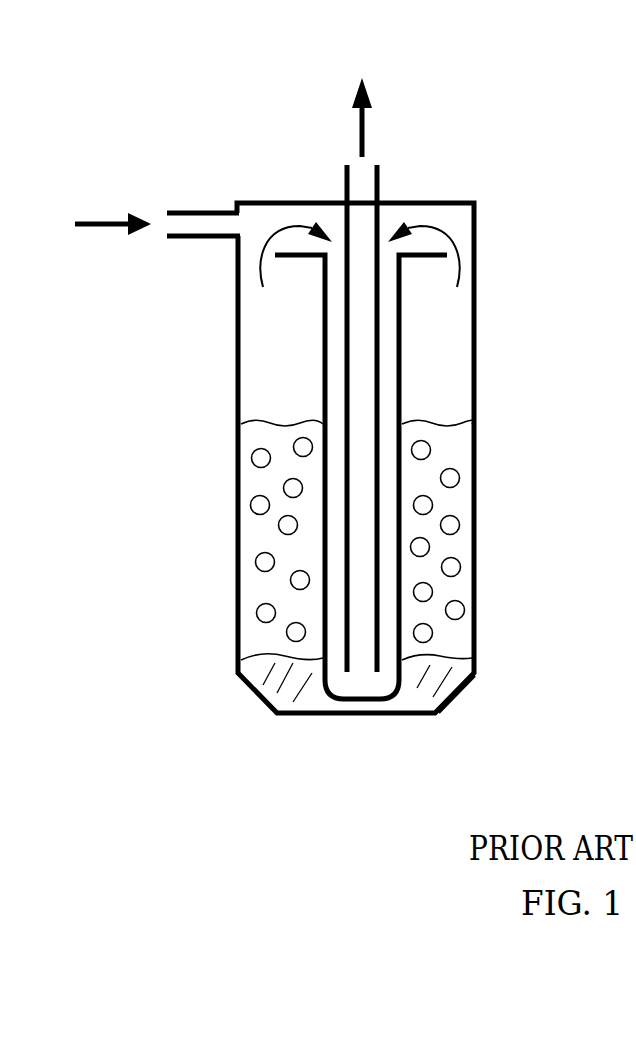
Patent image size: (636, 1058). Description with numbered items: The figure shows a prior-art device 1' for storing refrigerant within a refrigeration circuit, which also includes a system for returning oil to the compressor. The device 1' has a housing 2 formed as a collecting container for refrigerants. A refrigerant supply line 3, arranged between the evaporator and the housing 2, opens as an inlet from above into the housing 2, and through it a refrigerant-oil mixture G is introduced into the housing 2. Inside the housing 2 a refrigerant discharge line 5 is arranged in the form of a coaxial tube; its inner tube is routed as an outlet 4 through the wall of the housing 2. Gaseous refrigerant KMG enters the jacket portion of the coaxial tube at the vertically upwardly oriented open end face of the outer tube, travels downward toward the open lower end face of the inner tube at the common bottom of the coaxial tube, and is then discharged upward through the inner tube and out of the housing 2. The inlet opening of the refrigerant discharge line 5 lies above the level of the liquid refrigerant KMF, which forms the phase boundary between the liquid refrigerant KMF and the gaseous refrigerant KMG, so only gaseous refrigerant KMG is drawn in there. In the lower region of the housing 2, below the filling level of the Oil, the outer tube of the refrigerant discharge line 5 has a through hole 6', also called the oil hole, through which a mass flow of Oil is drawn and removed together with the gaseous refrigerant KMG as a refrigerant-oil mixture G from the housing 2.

The device 1' is at (341, 382).
The housing 2 is at (474, 270).
The refrigerant supply line 3 is at (197, 211).
The outlet 4 is at (380, 177).
The refrigerant discharge line 5 is at (390, 407).
The through hole 6' is at (481, 710).
The refrigerant-oil mixture G is at (128, 200).
The gaseous refrigerant KMG is at (257, 382).
The liquid refrigerant KMF is at (257, 587).
The oil Oil is at (267, 690).